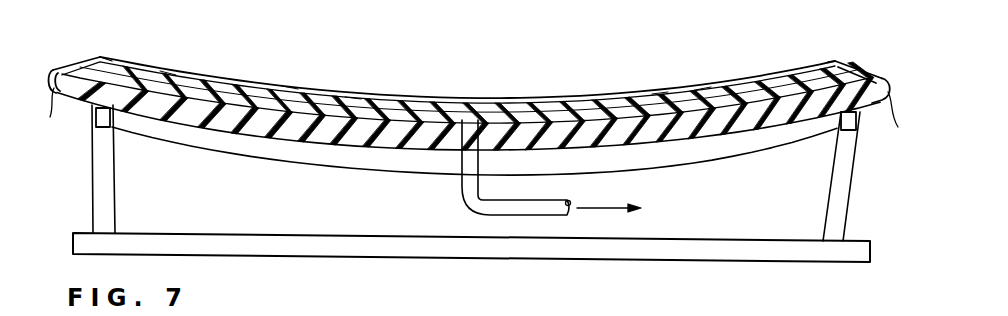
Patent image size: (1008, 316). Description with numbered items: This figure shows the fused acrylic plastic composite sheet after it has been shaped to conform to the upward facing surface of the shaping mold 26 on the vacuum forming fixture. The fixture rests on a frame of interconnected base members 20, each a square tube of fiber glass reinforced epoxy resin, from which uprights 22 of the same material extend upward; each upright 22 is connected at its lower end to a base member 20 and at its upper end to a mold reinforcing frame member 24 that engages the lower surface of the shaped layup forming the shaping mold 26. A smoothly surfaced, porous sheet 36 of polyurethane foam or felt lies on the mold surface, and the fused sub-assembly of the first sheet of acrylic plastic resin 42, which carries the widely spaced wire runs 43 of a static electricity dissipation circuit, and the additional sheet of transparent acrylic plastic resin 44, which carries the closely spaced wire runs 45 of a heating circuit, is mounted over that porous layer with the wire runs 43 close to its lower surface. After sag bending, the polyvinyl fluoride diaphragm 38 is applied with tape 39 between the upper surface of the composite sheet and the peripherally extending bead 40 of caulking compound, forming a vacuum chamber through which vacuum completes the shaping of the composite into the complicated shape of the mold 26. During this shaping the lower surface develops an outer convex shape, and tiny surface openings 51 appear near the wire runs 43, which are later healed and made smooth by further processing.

The base member 20 is at (345, 257).
The upright 22 is at (115, 212).
The mold reinforcing frame member 24 is at (95, 113).
The shaping mold 26 is at (90, 62).
The porous sheet 36 is at (98, 57).
The diaphragm 38 is at (80, 62).
The tape 39 is at (110, 60).
The bead 40 is at (58, 72).
The first sheet of acrylic plastic resin 42 is at (168, 78).
The wire runs 43 is at (353, 97).
The additional sheet of transparent acrylic plastic resin 44 is at (290, 87).
The wire runs 45 is at (660, 97).
The surface openings 51 is at (233, 88).